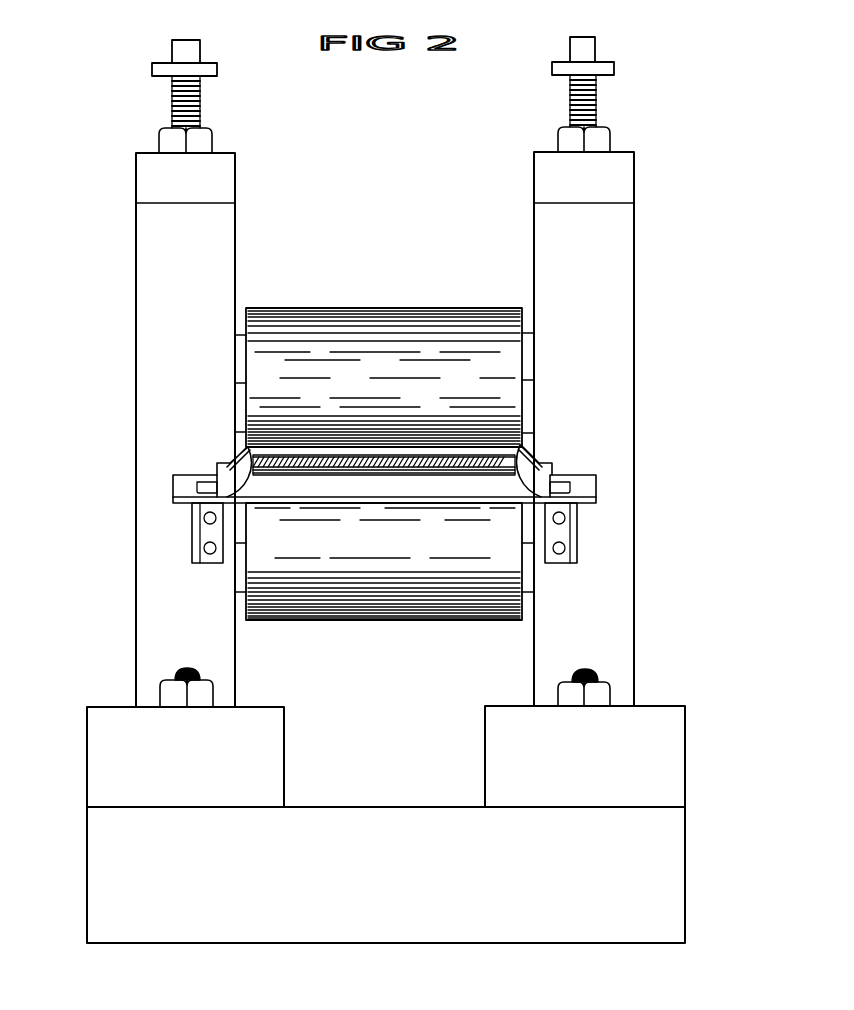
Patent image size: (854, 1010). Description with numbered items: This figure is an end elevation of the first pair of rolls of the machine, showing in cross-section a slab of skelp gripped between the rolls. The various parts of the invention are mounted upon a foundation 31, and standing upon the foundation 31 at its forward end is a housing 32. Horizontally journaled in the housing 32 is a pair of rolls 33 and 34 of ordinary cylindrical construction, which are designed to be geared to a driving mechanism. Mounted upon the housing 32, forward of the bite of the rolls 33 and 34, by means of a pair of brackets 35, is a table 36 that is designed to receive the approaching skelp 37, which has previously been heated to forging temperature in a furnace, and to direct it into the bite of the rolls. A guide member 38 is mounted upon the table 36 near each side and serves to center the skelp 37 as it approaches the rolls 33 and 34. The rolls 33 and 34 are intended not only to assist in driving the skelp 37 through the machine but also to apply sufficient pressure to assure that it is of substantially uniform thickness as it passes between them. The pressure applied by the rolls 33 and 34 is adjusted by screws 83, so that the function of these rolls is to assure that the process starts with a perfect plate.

The foundation 31 is at (115, 870).
The housing 32 is at (153, 618).
The roll 33 is at (355, 328).
The roll 34 is at (413, 598).
The brackets 35 is at (205, 533).
The table 36 is at (183, 487).
The skelp 37 is at (300, 457).
The guide member 38 is at (235, 468).
The screws 83 is at (172, 90).